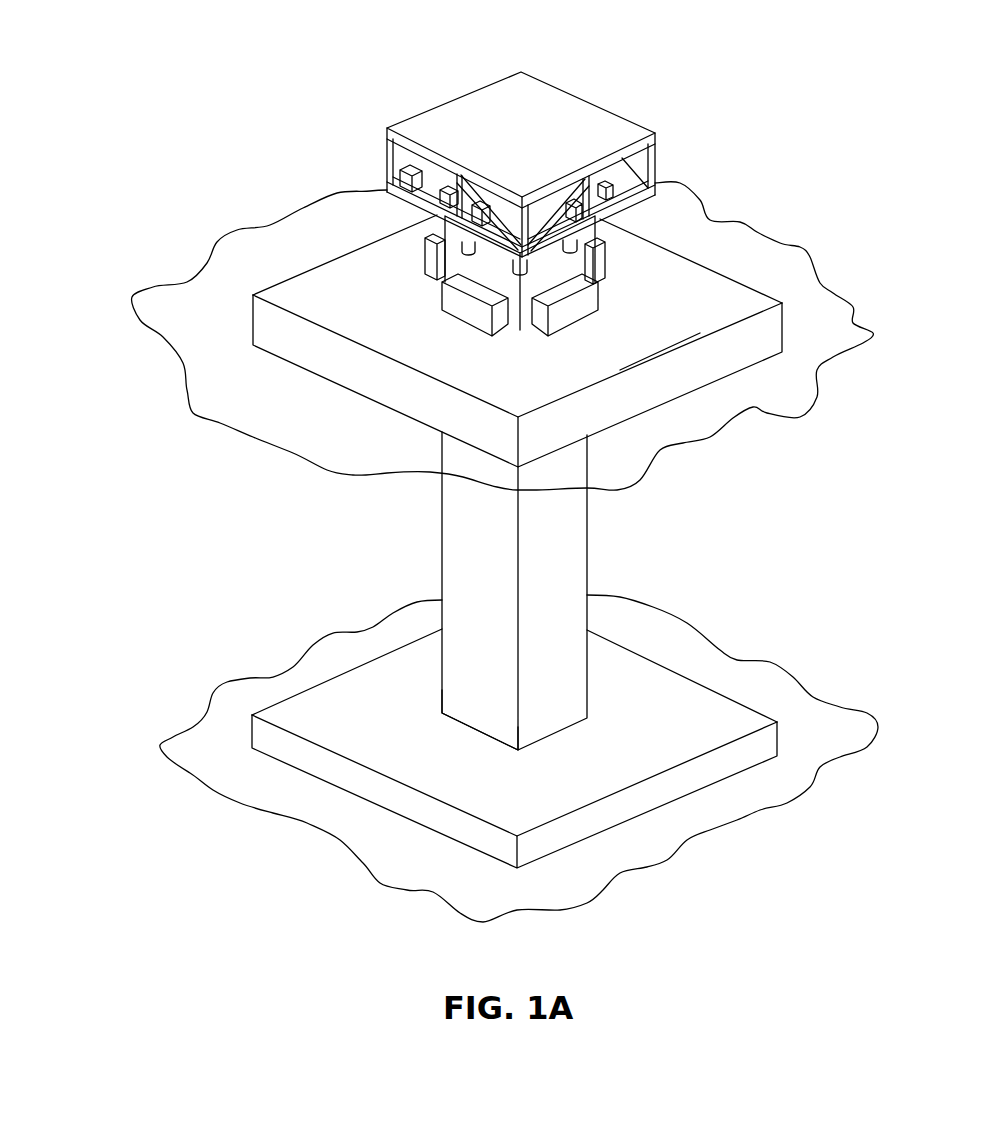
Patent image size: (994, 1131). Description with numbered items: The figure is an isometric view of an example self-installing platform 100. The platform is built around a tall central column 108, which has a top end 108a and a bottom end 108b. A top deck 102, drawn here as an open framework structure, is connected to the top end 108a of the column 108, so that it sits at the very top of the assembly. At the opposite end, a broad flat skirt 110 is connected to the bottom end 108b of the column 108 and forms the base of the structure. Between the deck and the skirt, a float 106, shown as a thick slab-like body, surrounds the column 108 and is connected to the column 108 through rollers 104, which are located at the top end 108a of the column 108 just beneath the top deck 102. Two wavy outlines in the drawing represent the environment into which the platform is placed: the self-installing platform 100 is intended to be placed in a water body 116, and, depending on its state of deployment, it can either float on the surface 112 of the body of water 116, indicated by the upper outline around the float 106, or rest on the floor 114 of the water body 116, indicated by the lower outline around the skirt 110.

The self-installing platform 100 is at (282, 108).
The top deck 102 is at (652, 186).
The rollers 104 is at (600, 297).
The float 106 is at (693, 343).
The column 108 is at (587, 557).
The top end 108a is at (453, 265).
The bottom end 108b is at (442, 698).
The skirt 110 is at (720, 693).
The surface 112 is at (157, 317).
The floor 114 is at (200, 747).
The water body 116 is at (232, 534).